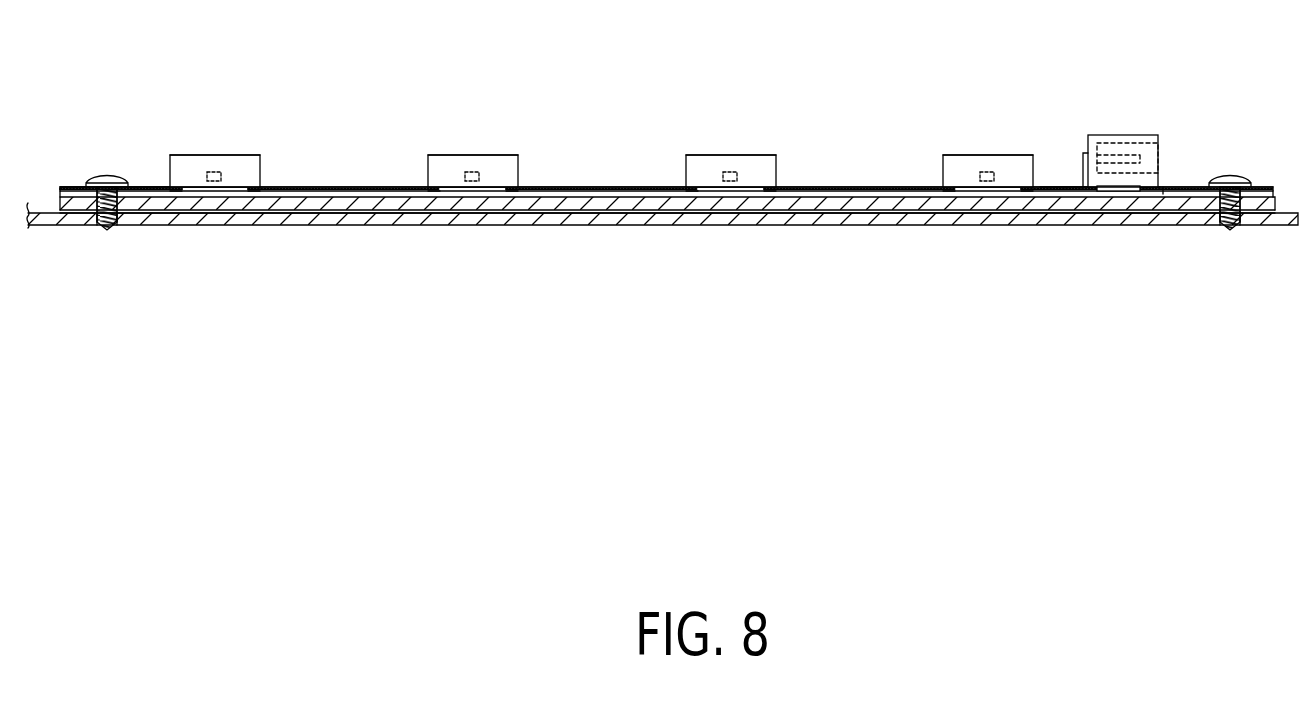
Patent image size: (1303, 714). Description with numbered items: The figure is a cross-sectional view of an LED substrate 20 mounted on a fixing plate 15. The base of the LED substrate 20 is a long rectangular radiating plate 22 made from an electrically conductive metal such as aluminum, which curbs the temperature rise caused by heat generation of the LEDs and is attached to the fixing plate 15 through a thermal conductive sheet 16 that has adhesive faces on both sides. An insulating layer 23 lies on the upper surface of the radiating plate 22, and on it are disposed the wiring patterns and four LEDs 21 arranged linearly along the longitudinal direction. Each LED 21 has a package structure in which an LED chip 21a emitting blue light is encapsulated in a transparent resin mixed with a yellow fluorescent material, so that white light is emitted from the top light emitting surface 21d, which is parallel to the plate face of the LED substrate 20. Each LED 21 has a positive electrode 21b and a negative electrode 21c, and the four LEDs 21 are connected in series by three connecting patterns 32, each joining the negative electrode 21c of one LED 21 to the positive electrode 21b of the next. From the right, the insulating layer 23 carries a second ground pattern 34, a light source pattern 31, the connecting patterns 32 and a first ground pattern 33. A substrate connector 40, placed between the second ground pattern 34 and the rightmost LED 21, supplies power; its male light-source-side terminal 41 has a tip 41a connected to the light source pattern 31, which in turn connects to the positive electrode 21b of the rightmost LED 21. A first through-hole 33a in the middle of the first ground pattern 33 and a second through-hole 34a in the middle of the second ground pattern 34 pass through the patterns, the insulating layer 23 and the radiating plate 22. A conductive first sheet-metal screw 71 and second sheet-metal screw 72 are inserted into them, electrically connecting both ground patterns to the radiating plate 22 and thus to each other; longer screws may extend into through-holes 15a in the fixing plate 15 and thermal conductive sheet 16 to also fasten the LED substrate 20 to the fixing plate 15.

The fixing plate 15 is at (593, 220).
The through-hole 15a is at (107, 226).
The thermal conductive sheet 16 is at (622, 212).
The LED substrate 20 is at (574, 118).
The LED 21 is at (212, 160).
The LED chip 21a is at (222, 172).
The positive electrode 21b is at (255, 192).
The negative electrode 21c is at (180, 192).
The light emitting surface 21d is at (185, 155).
The radiating plate 22 is at (828, 203).
The insulating layer 23 is at (883, 194).
The light source pattern 31 is at (1053, 187).
The connecting pattern 32 is at (355, 187).
The first ground pattern 33 is at (148, 187).
The first through-hole 33a is at (104, 229).
The second ground pattern 34 is at (1163, 190).
The second through-hole 34a is at (1222, 229).
The substrate connector 40 is at (1105, 135).
The light-source-side terminal 41 is at (1122, 148).
The tip of light-source-side terminal 41a is at (1080, 190).
The first sheet-metal screw 71 is at (105, 175).
The second sheet-metal screw 72 is at (1232, 176).